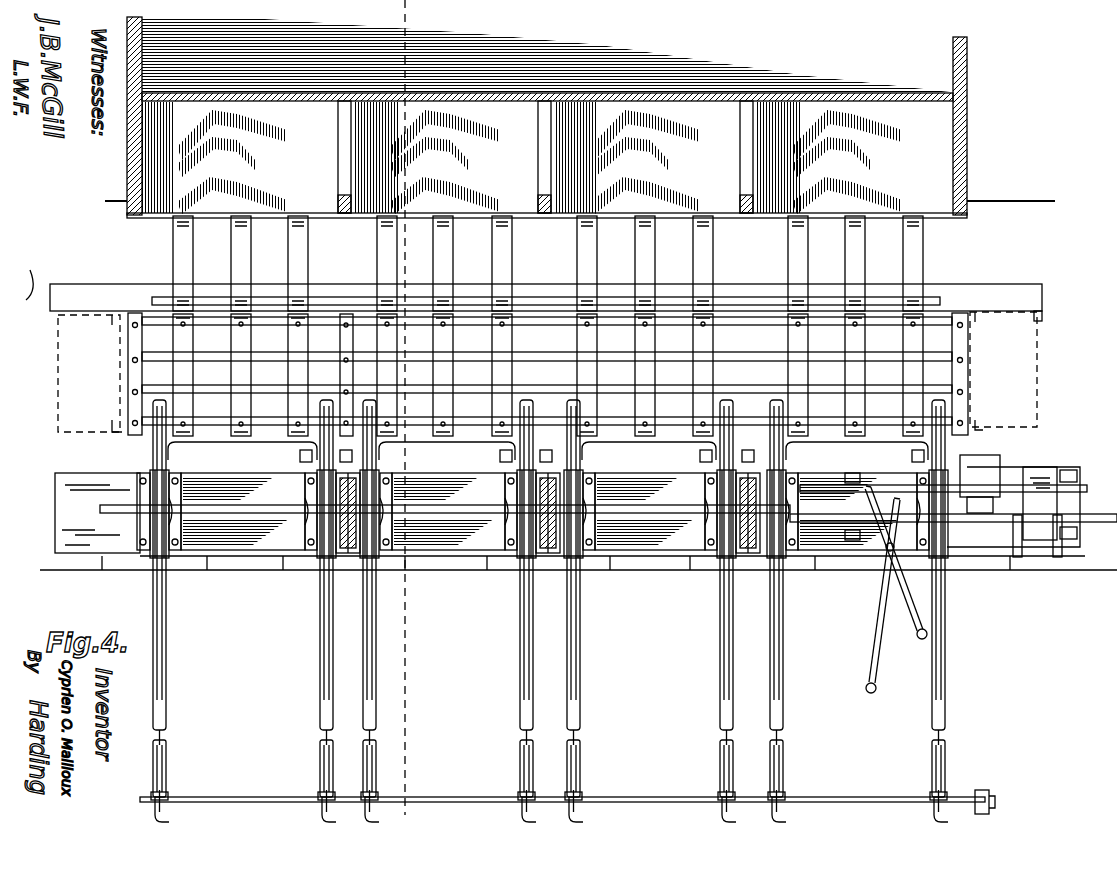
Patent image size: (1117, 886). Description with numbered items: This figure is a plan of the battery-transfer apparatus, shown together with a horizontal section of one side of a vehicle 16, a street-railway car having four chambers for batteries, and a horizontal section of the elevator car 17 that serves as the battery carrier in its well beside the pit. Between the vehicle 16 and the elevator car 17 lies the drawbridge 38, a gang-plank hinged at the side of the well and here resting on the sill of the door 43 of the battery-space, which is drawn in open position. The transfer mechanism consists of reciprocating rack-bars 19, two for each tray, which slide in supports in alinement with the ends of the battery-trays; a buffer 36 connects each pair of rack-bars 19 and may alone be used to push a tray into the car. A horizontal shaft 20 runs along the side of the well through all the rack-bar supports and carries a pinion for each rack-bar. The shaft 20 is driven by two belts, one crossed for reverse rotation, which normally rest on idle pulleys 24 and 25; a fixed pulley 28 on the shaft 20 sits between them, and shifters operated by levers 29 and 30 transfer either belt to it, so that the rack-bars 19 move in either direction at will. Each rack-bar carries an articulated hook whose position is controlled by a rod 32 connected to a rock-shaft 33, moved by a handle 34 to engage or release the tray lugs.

The vehicle 16 is at (968, 135).
The elevator car 17 is at (140, 368).
The rack-bars 19 is at (177, 636).
The horizontal shaft 20 is at (104, 510).
The idle pulley 24 is at (982, 468).
The idle pulley 25 is at (1043, 468).
The fixed pulley 28 is at (1008, 553).
The lever 29 is at (864, 601).
The lever 30 is at (896, 576).
The rod 32 is at (523, 647).
The rock-shaft 33 is at (660, 788).
The handle 34 is at (975, 805).
The buffer 36 is at (546, 383).
The drawbridge 38 is at (172, 251).
The door 43 is at (346, 223).